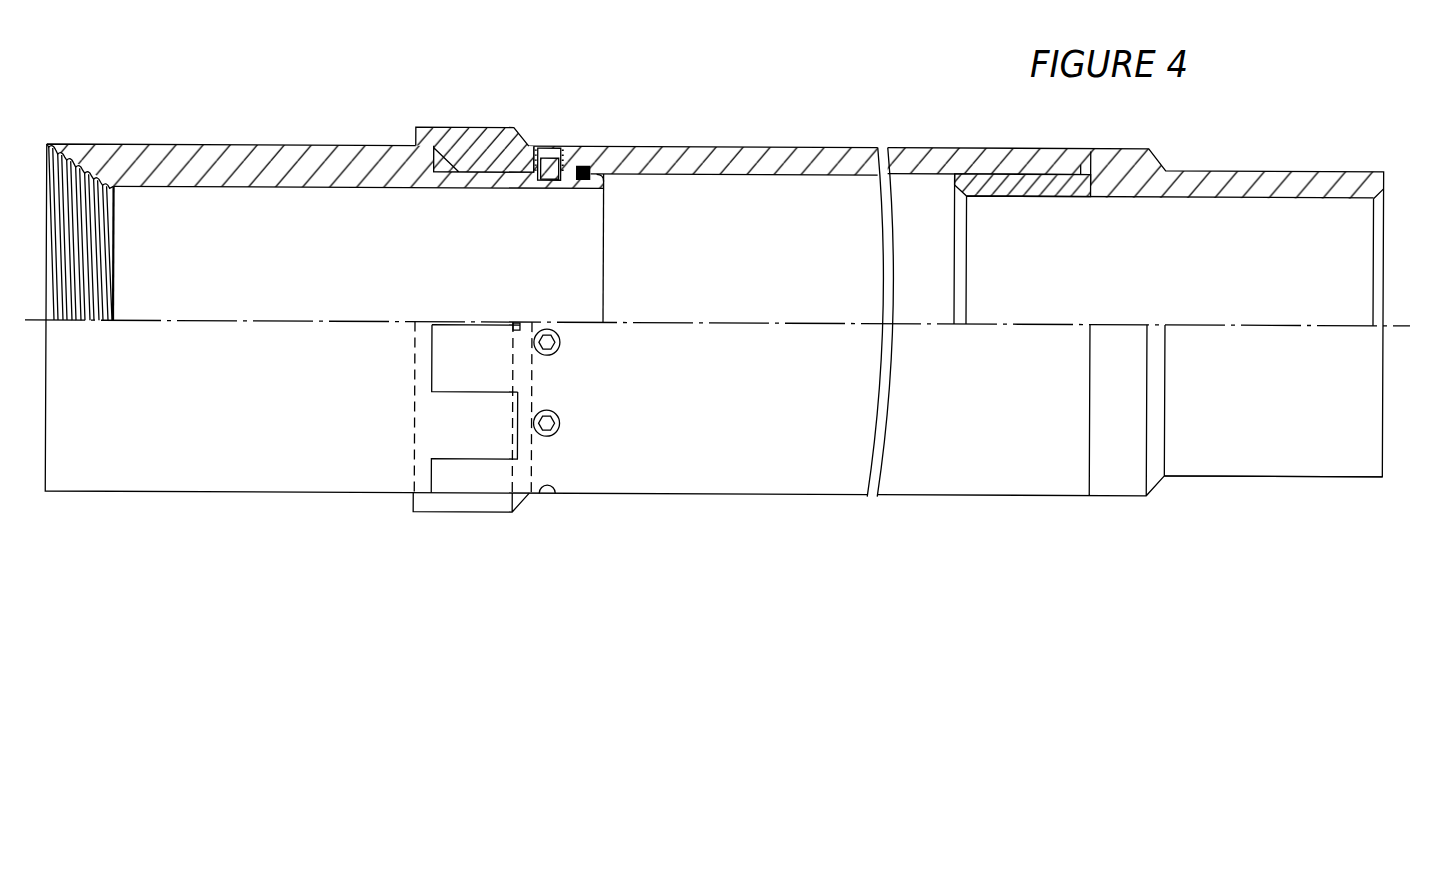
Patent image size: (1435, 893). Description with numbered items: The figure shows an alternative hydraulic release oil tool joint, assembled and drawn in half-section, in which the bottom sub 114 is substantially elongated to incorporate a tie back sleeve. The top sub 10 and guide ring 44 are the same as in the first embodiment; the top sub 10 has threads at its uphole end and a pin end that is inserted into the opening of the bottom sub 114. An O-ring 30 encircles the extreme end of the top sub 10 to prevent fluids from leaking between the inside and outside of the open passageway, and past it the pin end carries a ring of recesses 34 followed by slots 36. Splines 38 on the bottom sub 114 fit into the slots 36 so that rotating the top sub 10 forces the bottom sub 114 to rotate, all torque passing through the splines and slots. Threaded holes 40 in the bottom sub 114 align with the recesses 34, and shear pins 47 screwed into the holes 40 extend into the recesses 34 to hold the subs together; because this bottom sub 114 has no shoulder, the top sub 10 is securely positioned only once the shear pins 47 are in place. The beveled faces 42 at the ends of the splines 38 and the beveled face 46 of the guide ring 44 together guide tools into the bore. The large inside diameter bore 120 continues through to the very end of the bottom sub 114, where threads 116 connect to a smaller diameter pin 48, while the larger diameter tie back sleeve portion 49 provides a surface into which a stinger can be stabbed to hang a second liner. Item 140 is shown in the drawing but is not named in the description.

The top sub 10 is at (230, 490).
The O-ring 30 is at (603, 177).
The recesses 34 is at (560, 182).
The slots 36 is at (432, 370).
The splines 38 is at (457, 346).
The threaded holes 40 is at (548, 354).
The beveled faces 42 is at (433, 167).
The guide ring 44 is at (458, 512).
The beveled face 46 is at (415, 144).
The shear pins 47 is at (560, 341).
The pin 48 is at (1232, 472).
The tie back sleeve portion 49 is at (775, 492).
The bottom sub 114 is at (953, 492).
The threads 116 is at (1001, 181).
The bore 120 is at (705, 248).
The seal gland 140 is at (547, 146).